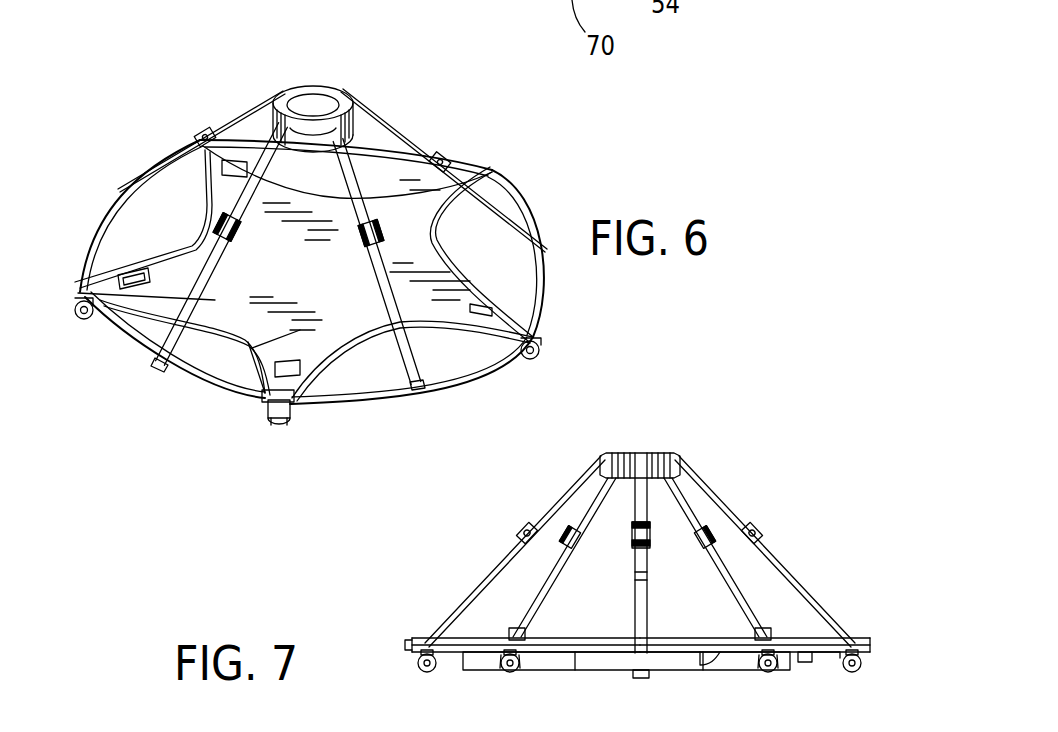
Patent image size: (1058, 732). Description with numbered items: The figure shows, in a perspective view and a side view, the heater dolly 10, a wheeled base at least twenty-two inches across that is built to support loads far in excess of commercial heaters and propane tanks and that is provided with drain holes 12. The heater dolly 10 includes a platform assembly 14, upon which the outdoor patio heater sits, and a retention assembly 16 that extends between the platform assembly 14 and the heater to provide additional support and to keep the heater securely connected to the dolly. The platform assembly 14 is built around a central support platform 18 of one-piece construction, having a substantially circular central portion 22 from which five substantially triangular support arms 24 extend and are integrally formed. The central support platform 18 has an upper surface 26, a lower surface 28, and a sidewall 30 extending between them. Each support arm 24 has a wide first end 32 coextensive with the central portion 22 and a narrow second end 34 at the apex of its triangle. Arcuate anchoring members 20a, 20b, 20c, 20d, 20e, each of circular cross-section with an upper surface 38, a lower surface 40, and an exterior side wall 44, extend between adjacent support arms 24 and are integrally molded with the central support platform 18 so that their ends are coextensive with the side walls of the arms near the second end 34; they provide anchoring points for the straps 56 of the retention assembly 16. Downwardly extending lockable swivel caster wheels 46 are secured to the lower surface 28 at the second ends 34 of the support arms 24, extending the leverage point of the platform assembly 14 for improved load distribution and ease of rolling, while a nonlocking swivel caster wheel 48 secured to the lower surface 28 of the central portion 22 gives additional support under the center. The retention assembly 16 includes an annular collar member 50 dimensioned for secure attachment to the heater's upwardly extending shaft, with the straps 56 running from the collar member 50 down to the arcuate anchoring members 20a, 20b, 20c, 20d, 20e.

In FIG. 6, the heater dolly 10 is at (188, 73).
In FIG. 7, the heater dolly 10 is at (797, 483).
In FIG. 6, the drain holes 12 is at (300, 405).
In FIG. 6, the platform assembly 14 is at (182, 247).
In FIG. 7, the platform assembly 14 is at (473, 640).
In FIG. 6, the retention assembly 16 is at (393, 128).
In FIG. 7, the retention assembly 16 is at (713, 497).
In FIG. 6, the central support platform 18 is at (443, 307).
In FIG. 7, the central support platform 18 is at (430, 643).
In FIG. 6, the arcuate anchoring member 20a is at (170, 363).
In FIG. 6, the arcuate anchoring member 20b is at (400, 390).
In FIG. 6, the arcuate anchoring member 20c is at (515, 213).
In FIG. 6, the arcuate anchoring member 20d is at (253, 137).
In FIG. 6, the arcuate anchoring member 20e is at (113, 222).
In FIG. 6, the central portion 22 is at (337, 283).
In FIG. 6, the support arms 24 is at (103, 285).
In FIG. 6, the upper surface 26 is at (288, 256).
In FIG. 7, the upper surface 26 is at (493, 640).
In FIG. 7, the lower surface 28 is at (583, 670).
In FIG. 7, the sidewall 30 is at (858, 642).
In FIG. 6, the wide first end 32 is at (287, 343).
In FIG. 6, the narrow second end 34 is at (280, 393).
In FIG. 7, the upper surface 38 is at (597, 640).
In FIG. 7, the lower surface 40 is at (710, 662).
In FIG. 7, the exterior side wall 44 is at (807, 645).
In FIG. 6, the lockable caster wheels 46 is at (540, 354).
In FIG. 7, the lockable caster wheels 46 is at (420, 667).
In FIG. 7, the nonlocking swivel caster wheel 48 is at (640, 678).
In FIG. 6, the collar member 50 is at (320, 86).
In FIG. 7, the collar member 50 is at (652, 455).
In FIG. 6, the straps 56 is at (127, 327).
In FIG. 7, the straps 56 is at (800, 590).